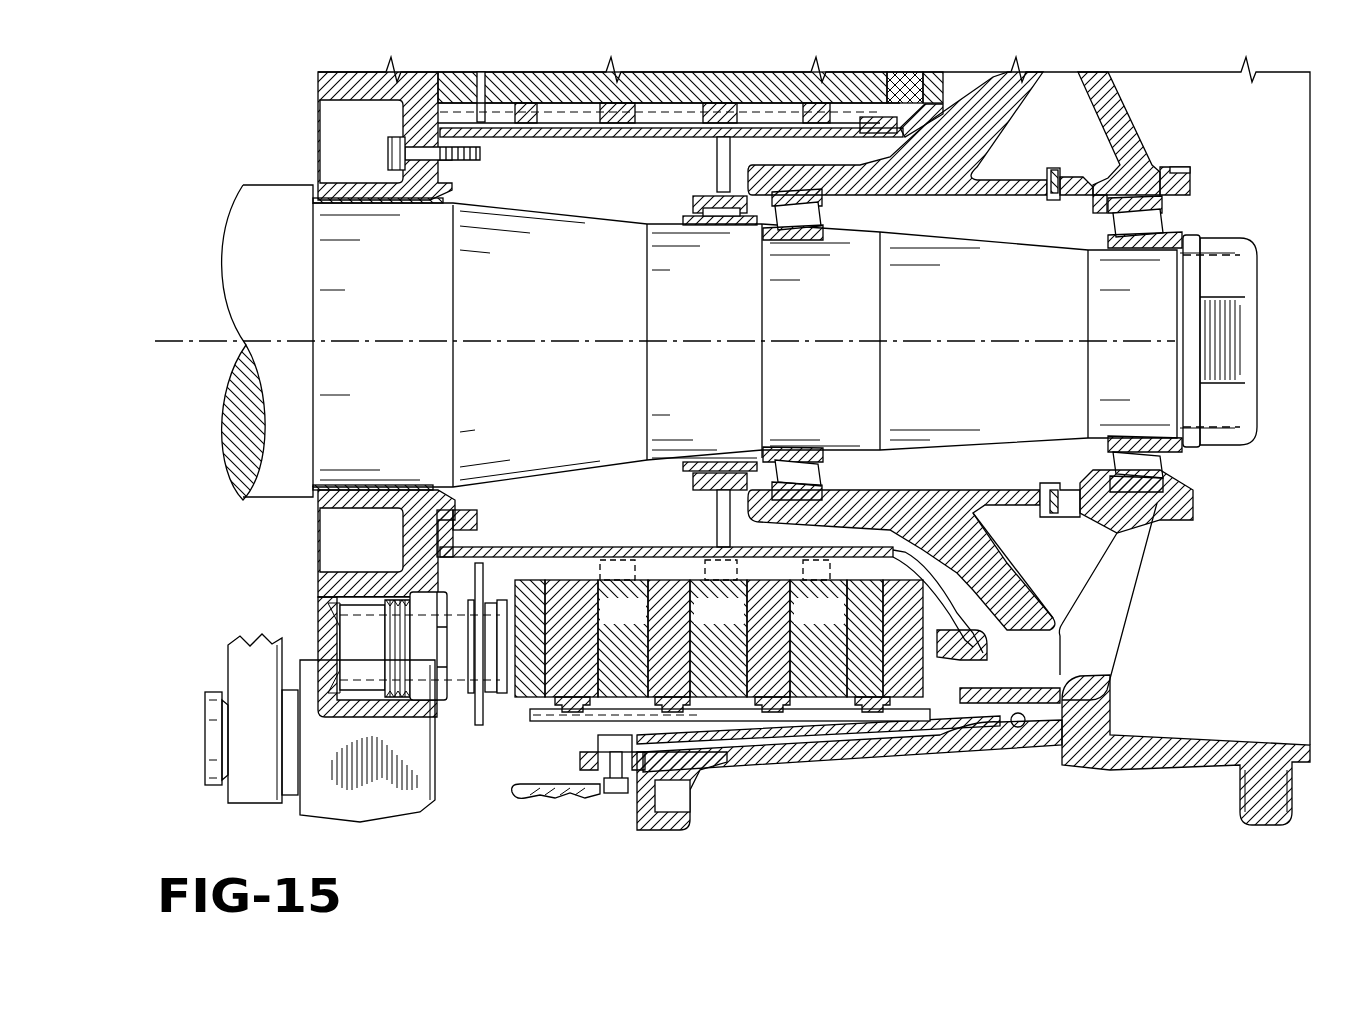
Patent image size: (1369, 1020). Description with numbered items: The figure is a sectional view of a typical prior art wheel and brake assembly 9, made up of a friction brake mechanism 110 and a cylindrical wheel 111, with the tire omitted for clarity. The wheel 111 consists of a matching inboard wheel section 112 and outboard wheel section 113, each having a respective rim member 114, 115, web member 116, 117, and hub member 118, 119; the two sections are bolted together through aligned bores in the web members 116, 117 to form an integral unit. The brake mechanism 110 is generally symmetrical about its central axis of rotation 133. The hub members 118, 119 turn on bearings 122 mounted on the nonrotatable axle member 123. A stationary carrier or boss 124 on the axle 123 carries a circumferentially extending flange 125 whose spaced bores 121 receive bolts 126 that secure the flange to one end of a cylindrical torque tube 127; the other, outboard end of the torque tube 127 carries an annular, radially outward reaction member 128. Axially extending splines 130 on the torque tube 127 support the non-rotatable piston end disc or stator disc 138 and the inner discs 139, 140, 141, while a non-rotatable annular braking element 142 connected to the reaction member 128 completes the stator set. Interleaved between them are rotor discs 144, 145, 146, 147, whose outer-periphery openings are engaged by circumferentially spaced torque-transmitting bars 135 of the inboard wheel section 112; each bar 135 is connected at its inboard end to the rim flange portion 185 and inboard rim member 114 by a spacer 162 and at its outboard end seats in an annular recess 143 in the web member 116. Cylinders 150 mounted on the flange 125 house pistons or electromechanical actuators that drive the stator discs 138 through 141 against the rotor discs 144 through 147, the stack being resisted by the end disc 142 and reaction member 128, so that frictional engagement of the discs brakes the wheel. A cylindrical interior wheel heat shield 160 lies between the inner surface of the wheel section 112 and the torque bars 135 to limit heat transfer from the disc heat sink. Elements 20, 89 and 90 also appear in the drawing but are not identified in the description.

The wheel and brake assembly 9 is at (172, 794).
The housing plate 20 is at (710, 752).
The bolt 89 is at (617, 792).
The retaining clip 90 is at (558, 788).
The friction brake mechanism 110 is at (482, 796).
The cylindrical wheel 111 is at (1116, 766).
The inboard wheel section 112 is at (792, 762).
The outboard wheel section 113 is at (1170, 756).
The rim member 114 is at (675, 815).
The rim member 115 is at (1253, 820).
The web member 116 is at (1015, 588).
The web member 117 is at (1117, 560).
The hub member 118 is at (918, 497).
The hub member 119 is at (1148, 513).
The bores 121 is at (397, 150).
The bearings 122 is at (812, 468).
The axle member 123 is at (956, 348).
The carrier or boss 124 is at (355, 500).
The flange 125 is at (415, 535).
The bolts 126 is at (390, 165).
The torque tube 127 is at (605, 141).
The reaction member 128 is at (1000, 625).
The splines 130 is at (665, 120).
The central axis of rotation 133 is at (165, 338).
The torque-transmitting bars 135 is at (852, 718).
The piston end disc or stator disc 138 is at (523, 598).
The inner disc 139 is at (603, 625).
The inner disc 140 is at (699, 625).
The inner disc 141 is at (799, 625).
The annular braking element 142 is at (908, 663).
The annular recess 143 is at (1024, 728).
The rotor disc 144 is at (568, 615).
The rotor disc 145 is at (666, 600).
The rotor disc 146 is at (777, 660).
The rotor disc 147 is at (868, 670).
The cylinders 150 is at (457, 667).
The interior wheel heat shield 160 is at (745, 737).
The spacer 162 is at (605, 740).
The rim flange portion 185 is at (598, 764).